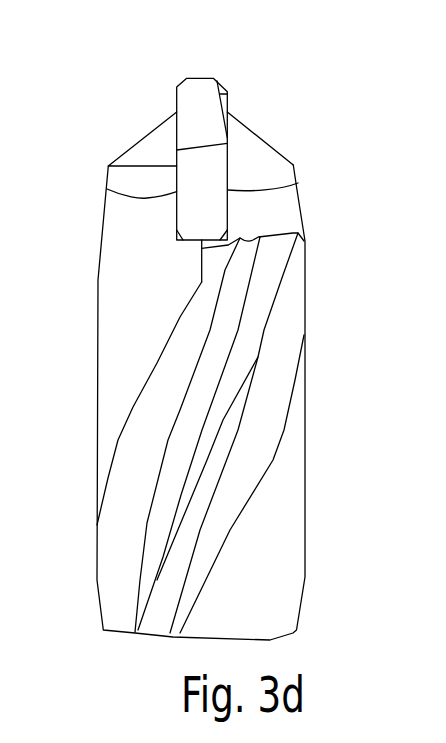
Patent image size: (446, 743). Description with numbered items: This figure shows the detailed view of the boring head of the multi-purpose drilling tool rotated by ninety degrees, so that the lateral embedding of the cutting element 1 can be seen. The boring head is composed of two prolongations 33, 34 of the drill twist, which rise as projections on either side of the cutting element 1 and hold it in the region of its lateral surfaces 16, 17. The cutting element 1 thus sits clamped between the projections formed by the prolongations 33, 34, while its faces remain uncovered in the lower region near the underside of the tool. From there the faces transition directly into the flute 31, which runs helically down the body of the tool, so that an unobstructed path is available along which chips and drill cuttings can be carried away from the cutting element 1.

The cutting element 1 is at (197, 104).
The lateral surface 16 is at (298, 183).
The lateral surface 17 is at (107, 189).
The flute 31 is at (260, 284).
The prolongation 33 is at (243, 148).
The prolongation 34 is at (148, 152).